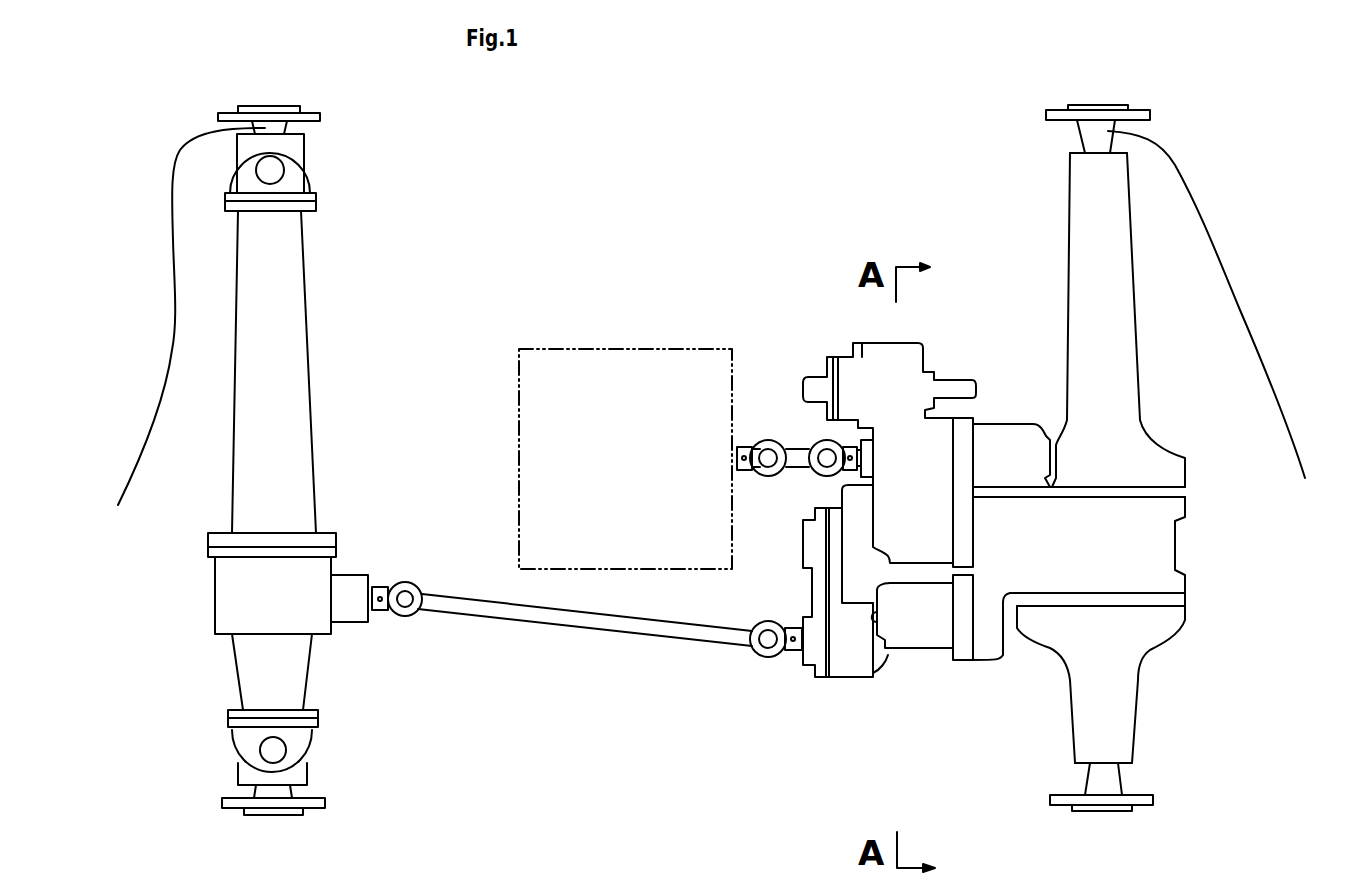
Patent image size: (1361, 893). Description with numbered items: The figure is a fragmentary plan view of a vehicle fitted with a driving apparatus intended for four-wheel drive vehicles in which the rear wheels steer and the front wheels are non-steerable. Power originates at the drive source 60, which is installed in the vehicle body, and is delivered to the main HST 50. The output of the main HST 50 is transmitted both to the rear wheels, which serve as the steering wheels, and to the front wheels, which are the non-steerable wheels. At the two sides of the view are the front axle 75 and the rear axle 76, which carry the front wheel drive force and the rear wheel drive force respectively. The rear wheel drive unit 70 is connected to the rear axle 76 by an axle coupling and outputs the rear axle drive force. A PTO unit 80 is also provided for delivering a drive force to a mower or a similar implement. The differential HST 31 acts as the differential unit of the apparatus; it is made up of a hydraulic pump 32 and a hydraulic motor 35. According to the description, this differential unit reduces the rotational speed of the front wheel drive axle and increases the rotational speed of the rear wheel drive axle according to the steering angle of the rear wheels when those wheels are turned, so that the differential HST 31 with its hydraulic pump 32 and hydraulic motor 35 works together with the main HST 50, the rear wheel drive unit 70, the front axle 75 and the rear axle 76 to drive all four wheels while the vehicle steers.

The differential HST 31 is at (1039, 620).
The hydraulic pump 32 is at (1009, 463).
The hydraulic motor 35 is at (912, 628).
The main HST 50 is at (900, 495).
The drive source 60 is at (605, 383).
The rear wheel drive unit 70 is at (848, 653).
The front axle 75 is at (1105, 785).
The rear axle 76 is at (268, 793).
The PTO unit 80 is at (850, 330).